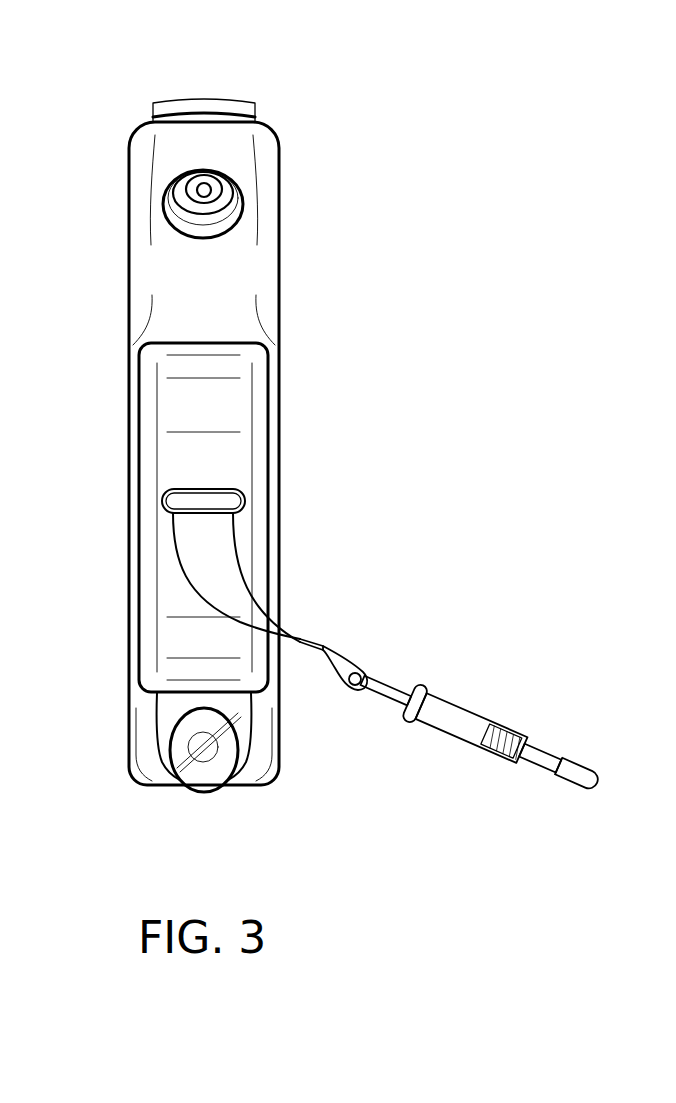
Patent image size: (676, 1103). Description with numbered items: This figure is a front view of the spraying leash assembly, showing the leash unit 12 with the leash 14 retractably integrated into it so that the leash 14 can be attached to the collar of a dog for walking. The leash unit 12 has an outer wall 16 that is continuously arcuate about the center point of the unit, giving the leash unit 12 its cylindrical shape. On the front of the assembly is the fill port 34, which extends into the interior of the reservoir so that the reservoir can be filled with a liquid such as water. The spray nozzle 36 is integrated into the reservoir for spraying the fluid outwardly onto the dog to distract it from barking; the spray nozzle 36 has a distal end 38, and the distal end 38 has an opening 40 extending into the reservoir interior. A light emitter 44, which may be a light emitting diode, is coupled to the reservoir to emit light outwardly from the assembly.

The leash unit 12 is at (243, 330).
The leash 14 is at (298, 636).
The outer wall 16 is at (177, 415).
The fill port 34 is at (178, 99).
The spray nozzle 36 is at (247, 204).
The distal end 38 is at (186, 193).
The opening 40 is at (204, 190).
The light emitter 44 is at (221, 757).